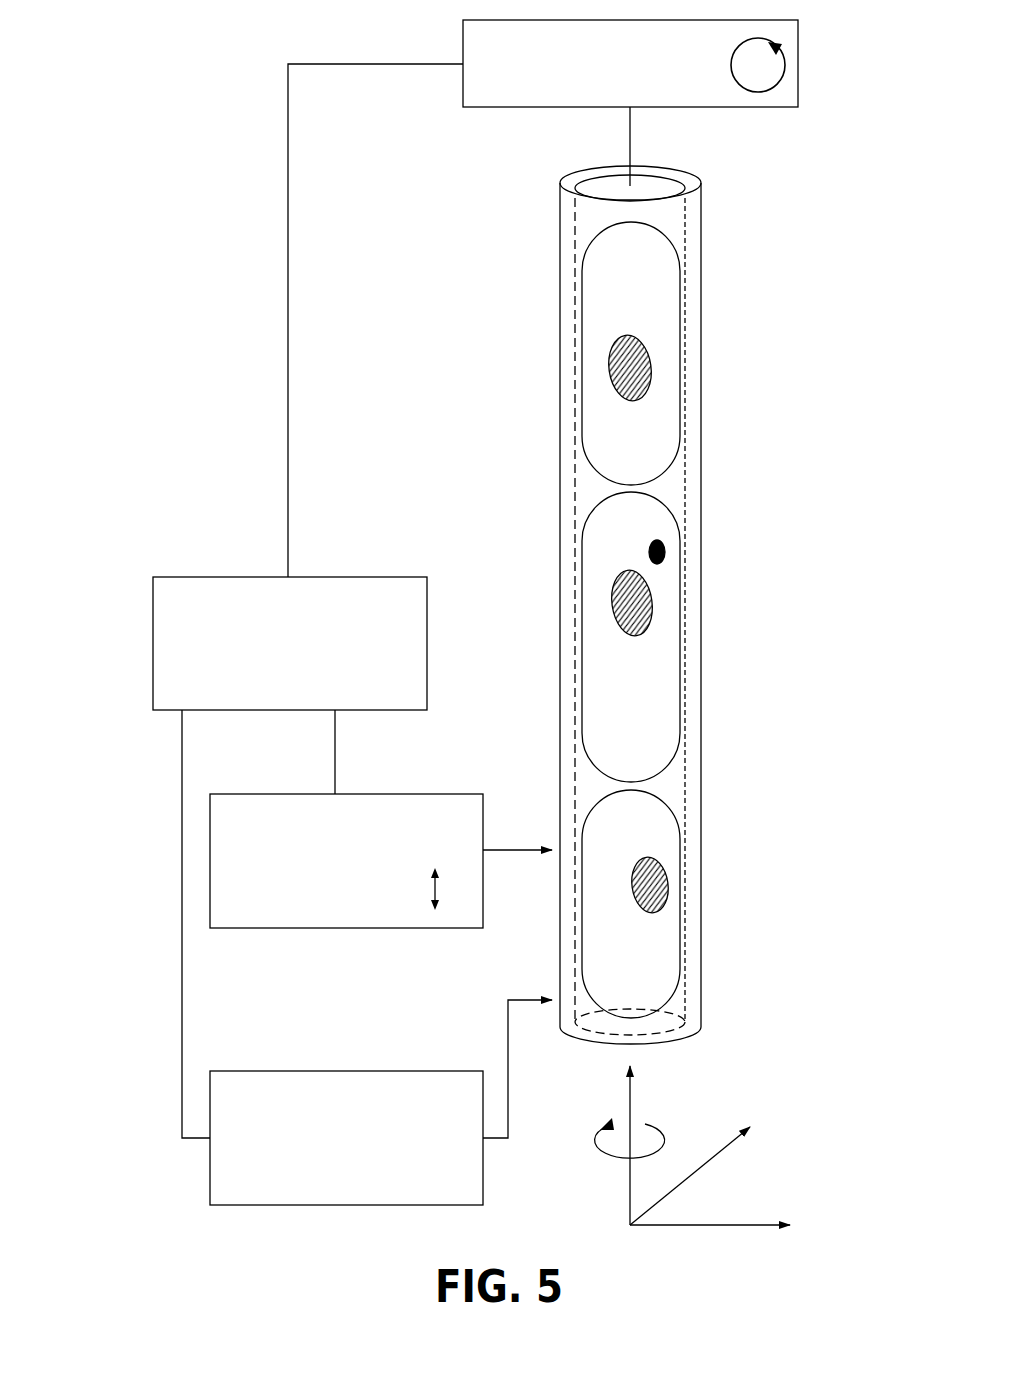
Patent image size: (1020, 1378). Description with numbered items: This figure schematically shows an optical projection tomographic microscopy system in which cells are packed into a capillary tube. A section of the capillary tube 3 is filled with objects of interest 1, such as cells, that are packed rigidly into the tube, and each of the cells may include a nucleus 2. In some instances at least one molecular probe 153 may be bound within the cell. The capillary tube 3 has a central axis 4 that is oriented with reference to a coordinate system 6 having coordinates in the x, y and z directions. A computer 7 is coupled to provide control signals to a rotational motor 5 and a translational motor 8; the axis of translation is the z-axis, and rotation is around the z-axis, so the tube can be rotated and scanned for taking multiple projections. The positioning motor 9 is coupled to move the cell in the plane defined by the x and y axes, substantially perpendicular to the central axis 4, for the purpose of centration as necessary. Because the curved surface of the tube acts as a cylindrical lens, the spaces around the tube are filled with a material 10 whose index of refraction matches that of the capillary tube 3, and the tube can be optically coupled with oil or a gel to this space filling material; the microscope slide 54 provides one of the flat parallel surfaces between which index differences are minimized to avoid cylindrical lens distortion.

The objects of interest 1 is at (672, 252).
The nucleus 2 is at (648, 352).
The capillary tube 3 is at (701, 205).
The central axis 4 is at (630, 142).
The rotational motor 5 is at (798, 60).
The coordinate system 6 is at (745, 1153).
The computer 7 is at (153, 640).
The translational motor 8 is at (348, 930).
The positioning motor 9 is at (210, 1170).
The material 10 is at (668, 490).
The microscope slide 54 is at (668, 789).
The molecular probe 153 is at (665, 550).